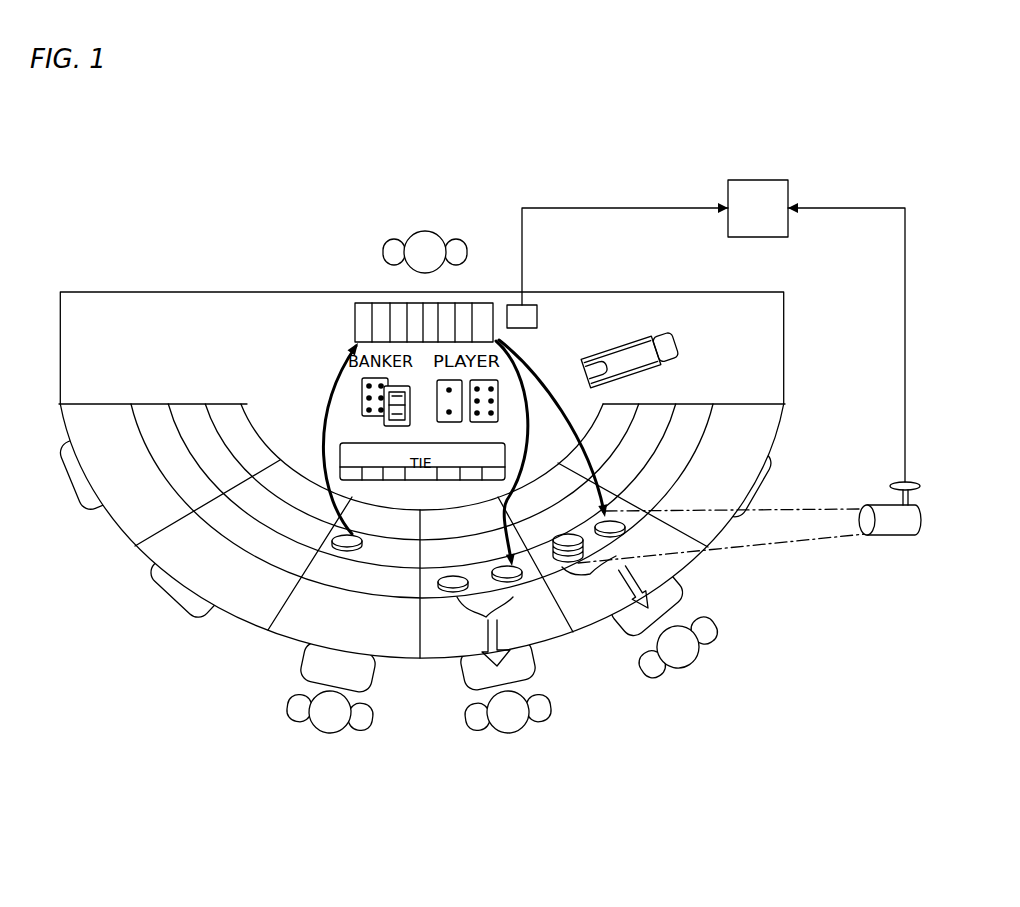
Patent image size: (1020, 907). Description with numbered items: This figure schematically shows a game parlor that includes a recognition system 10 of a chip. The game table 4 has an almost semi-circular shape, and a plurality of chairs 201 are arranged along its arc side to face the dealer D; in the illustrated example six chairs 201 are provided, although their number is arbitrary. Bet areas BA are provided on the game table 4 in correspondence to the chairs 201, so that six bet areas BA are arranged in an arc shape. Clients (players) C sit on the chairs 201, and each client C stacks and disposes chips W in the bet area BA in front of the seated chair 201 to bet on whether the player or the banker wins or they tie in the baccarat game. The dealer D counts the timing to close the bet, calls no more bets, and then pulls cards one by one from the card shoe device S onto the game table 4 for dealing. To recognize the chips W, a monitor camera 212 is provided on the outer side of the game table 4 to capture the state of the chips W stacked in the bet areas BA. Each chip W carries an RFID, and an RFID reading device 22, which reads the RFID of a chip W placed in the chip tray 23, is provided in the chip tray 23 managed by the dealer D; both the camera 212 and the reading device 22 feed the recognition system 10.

The game table 4 is at (787, 338).
The recognition system of a chip 10 is at (773, 185).
The RFID reading device 22 is at (538, 297).
The chip tray 23 is at (367, 302).
The chairs 201 is at (62, 488).
The monitor camera 212 is at (885, 510).
The card shoe device S is at (640, 350).
The dealer D is at (427, 237).
The clients (players) C is at (300, 710).
The chips W is at (452, 595).
The bet areas BA is at (243, 403).